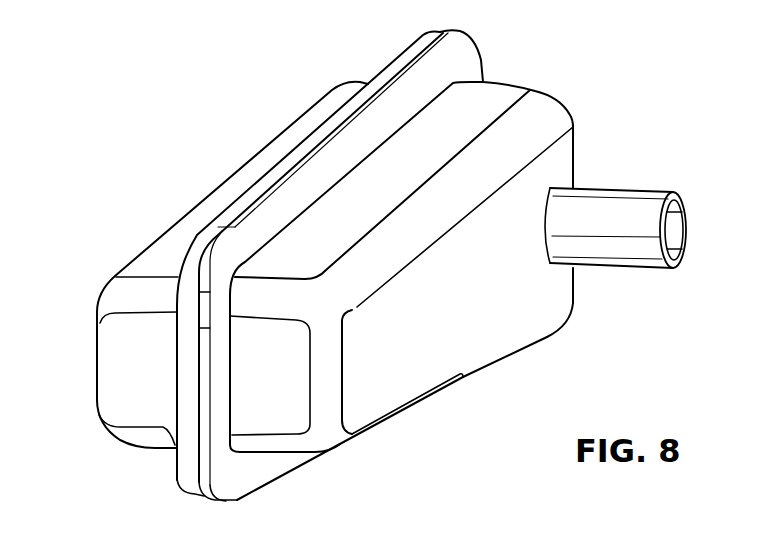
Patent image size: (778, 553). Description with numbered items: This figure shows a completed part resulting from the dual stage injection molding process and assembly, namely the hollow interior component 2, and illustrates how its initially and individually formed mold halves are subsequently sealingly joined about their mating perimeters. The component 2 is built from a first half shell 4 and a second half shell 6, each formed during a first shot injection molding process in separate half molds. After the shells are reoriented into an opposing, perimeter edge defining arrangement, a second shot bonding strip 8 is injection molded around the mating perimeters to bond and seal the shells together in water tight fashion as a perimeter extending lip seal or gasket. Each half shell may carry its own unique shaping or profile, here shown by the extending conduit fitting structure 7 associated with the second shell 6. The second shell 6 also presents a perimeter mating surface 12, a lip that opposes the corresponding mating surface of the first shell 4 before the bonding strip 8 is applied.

The component 2 is at (301, 78).
The first half shell 4 is at (105, 372).
The second half shell 6 is at (387, 407).
The conduit fitting structure 7 is at (618, 203).
The second shot bonding strip 8 is at (187, 458).
The perimeter mating surface of second shell 12 is at (470, 62).